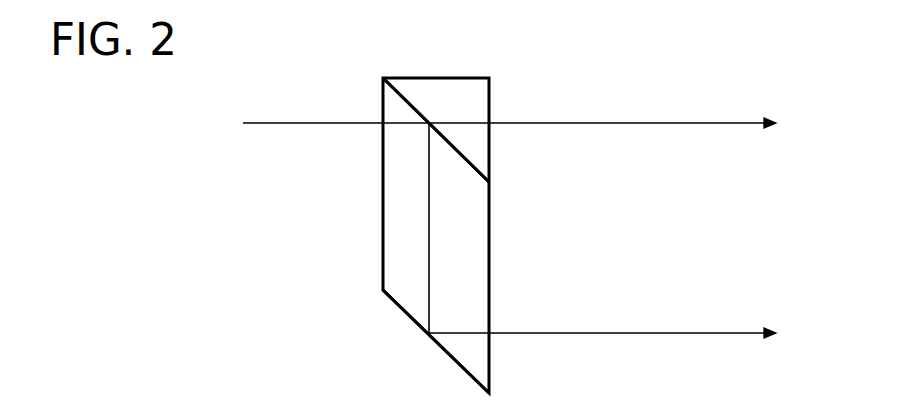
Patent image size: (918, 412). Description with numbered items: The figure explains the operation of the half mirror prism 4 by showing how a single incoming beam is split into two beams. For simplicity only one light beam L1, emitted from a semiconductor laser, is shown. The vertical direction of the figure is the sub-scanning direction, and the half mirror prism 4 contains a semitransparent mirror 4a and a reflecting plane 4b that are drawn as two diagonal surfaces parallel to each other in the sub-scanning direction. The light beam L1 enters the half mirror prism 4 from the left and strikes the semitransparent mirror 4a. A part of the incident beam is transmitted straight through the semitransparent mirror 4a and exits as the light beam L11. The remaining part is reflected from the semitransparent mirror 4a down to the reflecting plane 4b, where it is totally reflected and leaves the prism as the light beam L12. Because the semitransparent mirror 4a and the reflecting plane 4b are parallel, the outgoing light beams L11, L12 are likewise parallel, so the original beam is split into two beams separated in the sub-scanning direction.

The half mirror prism 4 is at (507, 97).
The semitransparent mirror 4a is at (420, 109).
The reflecting plane 4b is at (404, 315).
The light beam L1 is at (318, 122).
The light beam L11 is at (671, 124).
The light beam L12 is at (671, 334).